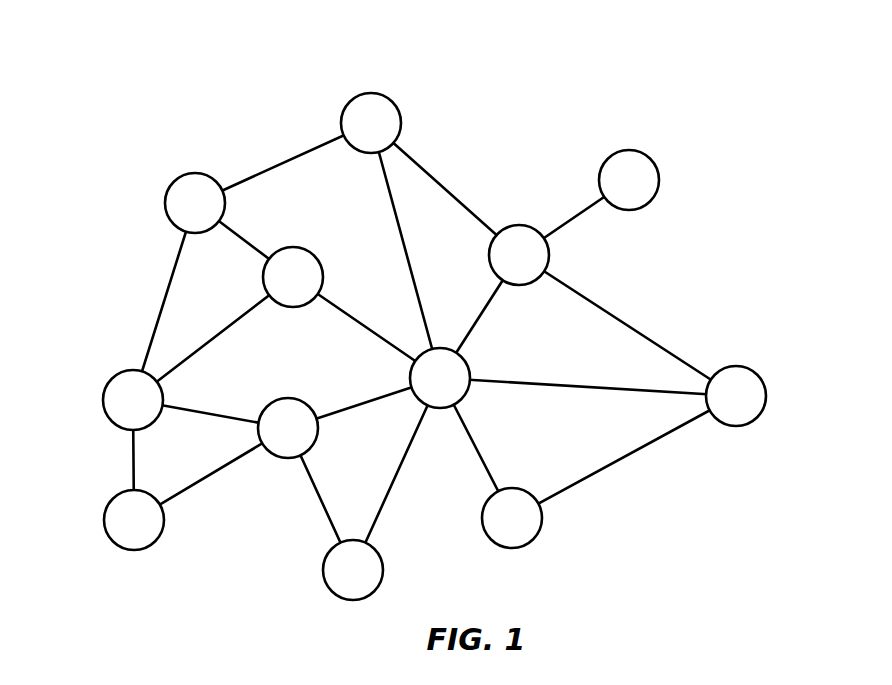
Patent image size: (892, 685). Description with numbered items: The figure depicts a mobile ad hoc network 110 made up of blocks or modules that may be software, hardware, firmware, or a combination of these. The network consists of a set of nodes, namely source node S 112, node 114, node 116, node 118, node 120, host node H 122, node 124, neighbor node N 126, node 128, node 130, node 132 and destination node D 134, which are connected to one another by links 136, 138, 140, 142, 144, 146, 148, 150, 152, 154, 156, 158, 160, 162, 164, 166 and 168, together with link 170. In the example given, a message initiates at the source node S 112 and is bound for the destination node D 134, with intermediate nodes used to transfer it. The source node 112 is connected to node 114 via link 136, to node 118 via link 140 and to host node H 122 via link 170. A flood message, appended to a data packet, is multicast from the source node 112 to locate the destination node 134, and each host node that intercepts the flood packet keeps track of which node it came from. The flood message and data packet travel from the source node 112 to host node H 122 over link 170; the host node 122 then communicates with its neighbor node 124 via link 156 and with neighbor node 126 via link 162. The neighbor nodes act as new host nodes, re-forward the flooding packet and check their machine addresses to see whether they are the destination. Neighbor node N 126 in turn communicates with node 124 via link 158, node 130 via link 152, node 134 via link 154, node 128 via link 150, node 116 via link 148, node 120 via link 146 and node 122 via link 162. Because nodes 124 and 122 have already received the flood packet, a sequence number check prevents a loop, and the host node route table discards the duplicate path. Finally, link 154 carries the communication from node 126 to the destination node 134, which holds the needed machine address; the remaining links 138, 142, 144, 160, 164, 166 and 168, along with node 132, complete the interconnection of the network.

The mobile ad hoc network 110 is at (692, 102).
The source node S 112 is at (105, 388).
The node 114 is at (168, 190).
The node 116 is at (400, 110).
The node 118 is at (122, 492).
The node 120 is at (310, 248).
The host node H 122 is at (295, 397).
The neighbor node 124 is at (330, 588).
The neighbor node N 126 is at (438, 407).
The node 128 is at (513, 230).
The node 130 is at (537, 538).
The node 132 is at (657, 167).
The destination node D 134 is at (745, 365).
The link 136 is at (163, 302).
The link 138 is at (260, 170).
The link 140 is at (132, 452).
The link 142 is at (240, 322).
The link 144 is at (242, 235).
The link 146 is at (340, 305).
The link 148 is at (408, 248).
The link 150 is at (488, 310).
The link 152 is at (473, 443).
The link 154 is at (573, 382).
The link 156 is at (320, 498).
The link 158 is at (382, 512).
The link 160 is at (237, 457).
The link 162 is at (333, 413).
The link 164 is at (432, 175).
The link 166 is at (630, 315).
The link 168 is at (627, 460).
The link 170 is at (212, 410).